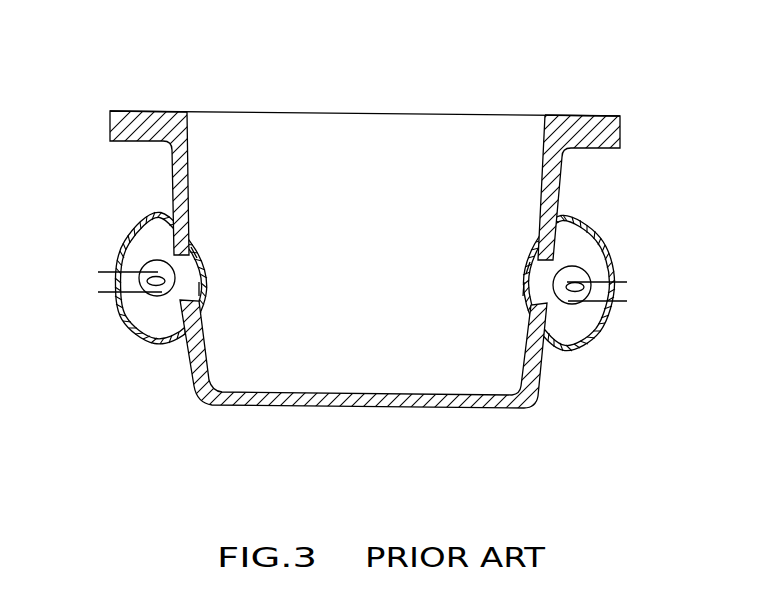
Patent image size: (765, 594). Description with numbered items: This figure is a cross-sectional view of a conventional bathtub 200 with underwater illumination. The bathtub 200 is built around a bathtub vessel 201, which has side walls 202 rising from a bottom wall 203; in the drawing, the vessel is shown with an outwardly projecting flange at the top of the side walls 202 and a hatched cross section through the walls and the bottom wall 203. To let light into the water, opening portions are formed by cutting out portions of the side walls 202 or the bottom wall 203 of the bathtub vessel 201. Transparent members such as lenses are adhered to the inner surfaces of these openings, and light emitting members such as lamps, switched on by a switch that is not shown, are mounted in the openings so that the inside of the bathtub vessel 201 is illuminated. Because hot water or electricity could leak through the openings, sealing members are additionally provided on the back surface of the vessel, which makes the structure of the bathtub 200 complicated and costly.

The bathtub 200 is at (382, 254).
The bathtub vessel 201 is at (155, 111).
The side walls 202 is at (172, 181).
The bottom wall 203 is at (290, 409).